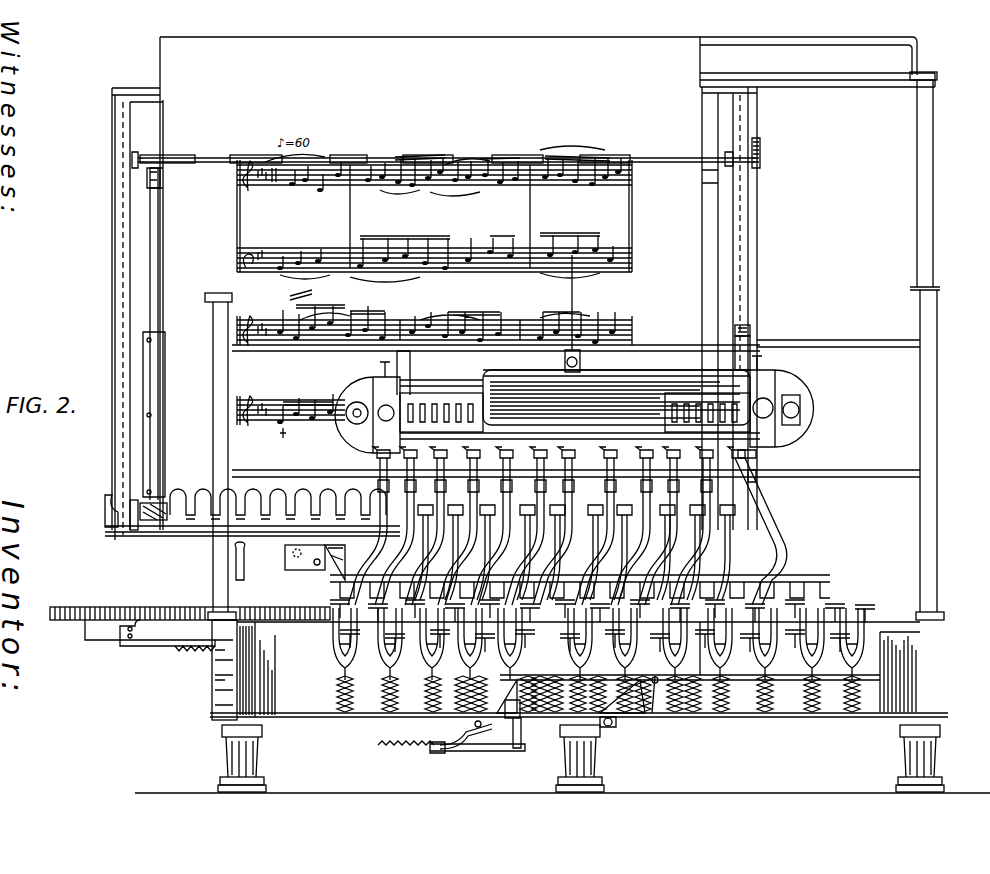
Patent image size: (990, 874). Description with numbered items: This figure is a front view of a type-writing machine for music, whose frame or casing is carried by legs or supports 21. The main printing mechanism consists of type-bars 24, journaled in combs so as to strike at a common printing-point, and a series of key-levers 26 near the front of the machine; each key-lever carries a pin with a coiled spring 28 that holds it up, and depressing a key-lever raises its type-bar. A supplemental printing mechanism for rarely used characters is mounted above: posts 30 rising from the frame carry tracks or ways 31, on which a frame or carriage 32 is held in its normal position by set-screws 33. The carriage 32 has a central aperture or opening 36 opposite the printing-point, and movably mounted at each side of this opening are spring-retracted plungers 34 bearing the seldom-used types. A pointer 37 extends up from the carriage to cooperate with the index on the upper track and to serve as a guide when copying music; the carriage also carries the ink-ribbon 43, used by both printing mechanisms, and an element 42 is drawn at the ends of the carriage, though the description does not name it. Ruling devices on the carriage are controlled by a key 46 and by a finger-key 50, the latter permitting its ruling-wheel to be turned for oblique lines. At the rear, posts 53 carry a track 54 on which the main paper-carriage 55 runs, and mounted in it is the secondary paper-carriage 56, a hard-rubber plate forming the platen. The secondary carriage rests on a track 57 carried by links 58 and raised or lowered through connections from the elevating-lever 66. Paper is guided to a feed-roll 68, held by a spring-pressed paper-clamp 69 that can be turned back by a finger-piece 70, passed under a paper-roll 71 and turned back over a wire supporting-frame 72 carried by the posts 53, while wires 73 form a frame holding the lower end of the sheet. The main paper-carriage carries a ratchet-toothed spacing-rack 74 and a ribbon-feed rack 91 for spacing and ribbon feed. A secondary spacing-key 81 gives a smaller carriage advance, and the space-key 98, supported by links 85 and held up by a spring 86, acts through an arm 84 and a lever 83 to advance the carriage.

The legs or supports 21 is at (248, 766).
The type-bars 24 is at (770, 522).
The key-levers 26 is at (825, 582).
The spring 28 is at (342, 680).
The posts 30 is at (218, 390).
The tracks or ways 31 is at (860, 330).
The frame or carriage 32 is at (783, 433).
The set-screws 33 is at (746, 331).
The plungers 34 is at (437, 405).
The central aperture or opening 36 is at (616, 397).
The pointer 37 is at (574, 270).
The pivot 42 is at (383, 418).
The ink-ribbon 43 is at (468, 395).
The key 46 is at (352, 420).
The finger-key 50 is at (795, 405).
The posts 53 is at (922, 200).
The track 54 is at (868, 85).
The main paper-carriage 55 is at (115, 208).
The secondary paper-carriage 56 is at (140, 268).
The track 57 is at (330, 565).
The links 58 is at (325, 568).
The elevating-lever 66 is at (244, 562).
The feed-roll 68 is at (170, 500).
The spring-pressed paper-clamp 69 is at (180, 522).
The finger-piece 70 is at (110, 506).
The paper-roll 71 is at (175, 160).
The wire supporting-frame 72 is at (765, 42).
The wires 73 is at (160, 190).
The ratchet-toothed spacing-rack 74 is at (180, 650).
The secondary spacing-key 81 is at (222, 632).
The lever 83 is at (442, 736).
The arm 84 is at (498, 752).
The links 85 is at (518, 740).
The spring 86 is at (612, 726).
The ribbon-feed rack 91 is at (97, 600).
The space-key 98 is at (656, 706).